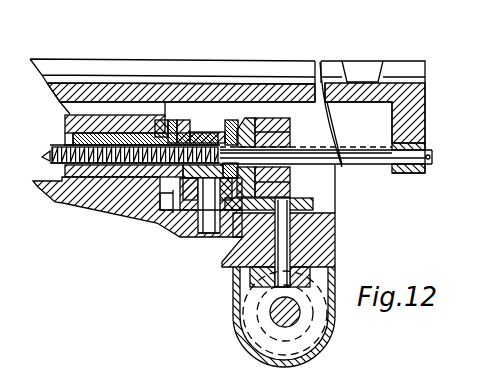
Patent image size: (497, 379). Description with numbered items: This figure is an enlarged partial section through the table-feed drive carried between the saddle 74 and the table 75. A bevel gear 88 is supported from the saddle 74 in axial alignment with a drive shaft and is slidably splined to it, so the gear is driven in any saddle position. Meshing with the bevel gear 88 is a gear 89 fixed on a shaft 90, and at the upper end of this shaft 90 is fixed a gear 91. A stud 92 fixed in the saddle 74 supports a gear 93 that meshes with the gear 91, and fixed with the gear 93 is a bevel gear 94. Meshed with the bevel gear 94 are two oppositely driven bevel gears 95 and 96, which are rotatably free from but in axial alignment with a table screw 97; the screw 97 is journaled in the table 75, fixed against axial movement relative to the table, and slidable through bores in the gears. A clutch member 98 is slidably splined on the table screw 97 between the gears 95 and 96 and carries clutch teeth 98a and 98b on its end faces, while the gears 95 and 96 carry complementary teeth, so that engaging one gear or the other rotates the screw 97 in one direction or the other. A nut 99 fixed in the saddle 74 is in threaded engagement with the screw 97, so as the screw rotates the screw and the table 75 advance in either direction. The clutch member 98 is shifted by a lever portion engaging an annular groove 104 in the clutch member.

The saddle 74 is at (90, 196).
The table 75 is at (422, 110).
The bevel gear 88 is at (320, 320).
The gear 89 is at (333, 268).
The shaft 90 is at (330, 233).
The gear 91 is at (300, 204).
The stud 92 is at (203, 236).
The gear 93 is at (143, 212).
The bevel gear 94 is at (182, 222).
The bevel gear 95 is at (173, 115).
The bevel gear 96 is at (245, 118).
The table screw 97 is at (337, 145).
The clutch member 98 is at (203, 113).
The clutch teeth 98a is at (195, 137).
The clutch teeth 98b is at (240, 110).
The nut 99 is at (68, 130).
The annular groove 104 is at (213, 132).